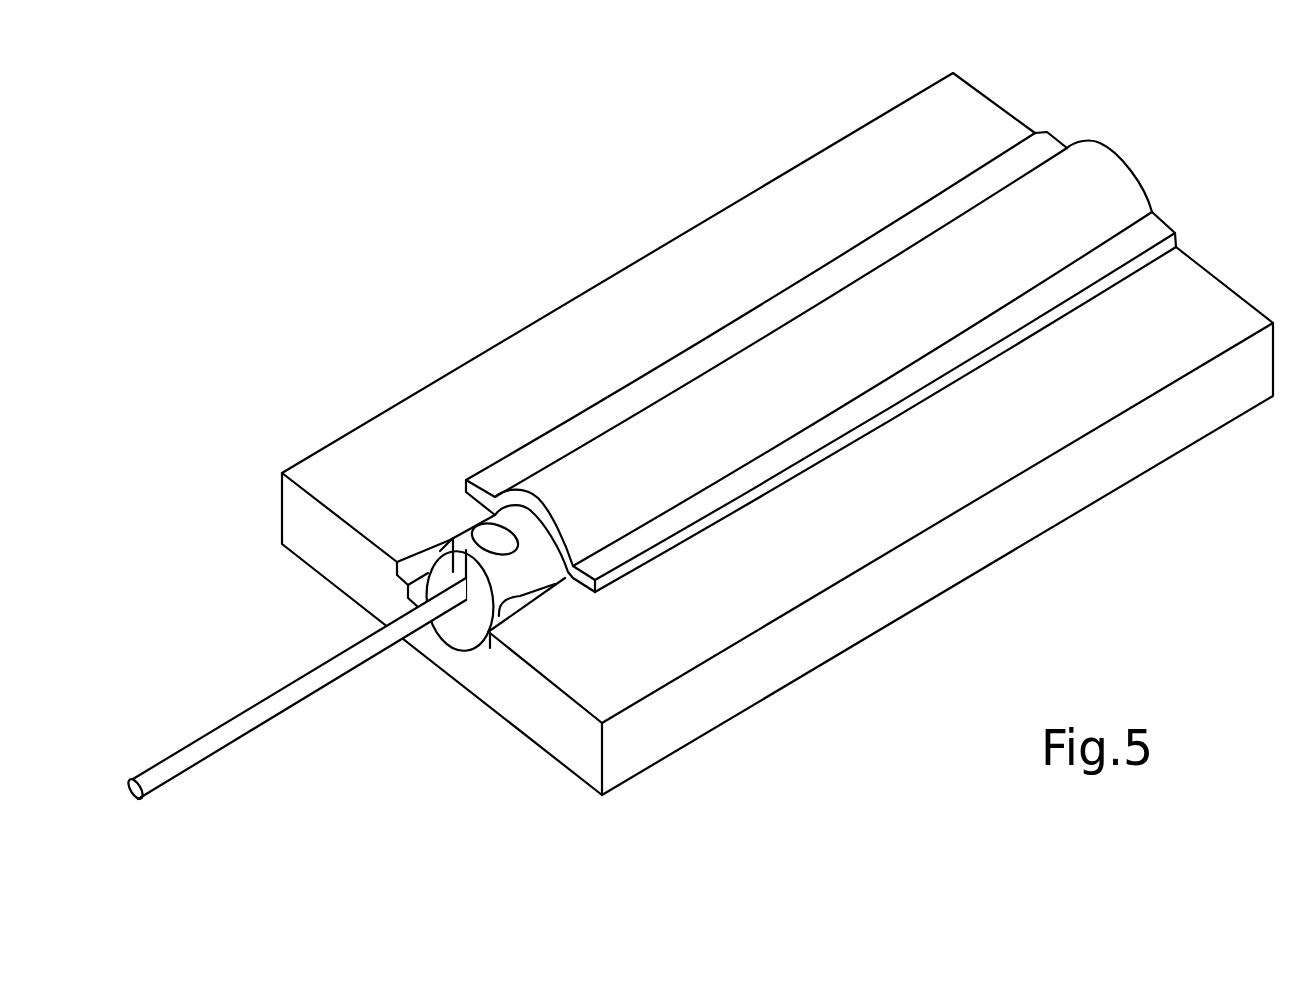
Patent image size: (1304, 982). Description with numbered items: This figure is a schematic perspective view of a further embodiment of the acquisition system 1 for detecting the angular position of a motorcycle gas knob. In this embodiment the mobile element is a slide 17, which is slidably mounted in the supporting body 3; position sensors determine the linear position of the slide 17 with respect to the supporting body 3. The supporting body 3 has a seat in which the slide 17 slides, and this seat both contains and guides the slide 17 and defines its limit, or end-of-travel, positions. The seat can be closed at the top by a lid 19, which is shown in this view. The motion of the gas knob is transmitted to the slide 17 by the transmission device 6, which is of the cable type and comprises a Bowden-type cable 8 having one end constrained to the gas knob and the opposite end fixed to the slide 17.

The acquisition system 1 is at (777, 430).
The supporting body 3 is at (1099, 477).
The transmission device 6 is at (213, 614).
The cable 8 is at (272, 710).
The slide 17 is at (535, 640).
The lid 19 is at (1088, 160).